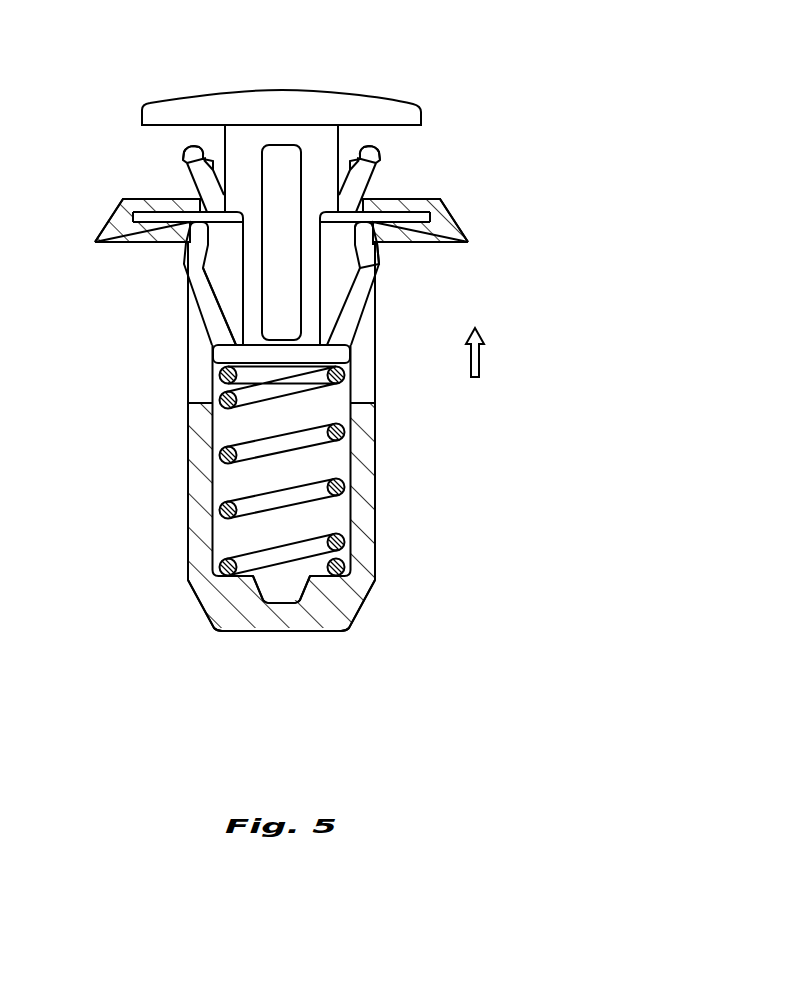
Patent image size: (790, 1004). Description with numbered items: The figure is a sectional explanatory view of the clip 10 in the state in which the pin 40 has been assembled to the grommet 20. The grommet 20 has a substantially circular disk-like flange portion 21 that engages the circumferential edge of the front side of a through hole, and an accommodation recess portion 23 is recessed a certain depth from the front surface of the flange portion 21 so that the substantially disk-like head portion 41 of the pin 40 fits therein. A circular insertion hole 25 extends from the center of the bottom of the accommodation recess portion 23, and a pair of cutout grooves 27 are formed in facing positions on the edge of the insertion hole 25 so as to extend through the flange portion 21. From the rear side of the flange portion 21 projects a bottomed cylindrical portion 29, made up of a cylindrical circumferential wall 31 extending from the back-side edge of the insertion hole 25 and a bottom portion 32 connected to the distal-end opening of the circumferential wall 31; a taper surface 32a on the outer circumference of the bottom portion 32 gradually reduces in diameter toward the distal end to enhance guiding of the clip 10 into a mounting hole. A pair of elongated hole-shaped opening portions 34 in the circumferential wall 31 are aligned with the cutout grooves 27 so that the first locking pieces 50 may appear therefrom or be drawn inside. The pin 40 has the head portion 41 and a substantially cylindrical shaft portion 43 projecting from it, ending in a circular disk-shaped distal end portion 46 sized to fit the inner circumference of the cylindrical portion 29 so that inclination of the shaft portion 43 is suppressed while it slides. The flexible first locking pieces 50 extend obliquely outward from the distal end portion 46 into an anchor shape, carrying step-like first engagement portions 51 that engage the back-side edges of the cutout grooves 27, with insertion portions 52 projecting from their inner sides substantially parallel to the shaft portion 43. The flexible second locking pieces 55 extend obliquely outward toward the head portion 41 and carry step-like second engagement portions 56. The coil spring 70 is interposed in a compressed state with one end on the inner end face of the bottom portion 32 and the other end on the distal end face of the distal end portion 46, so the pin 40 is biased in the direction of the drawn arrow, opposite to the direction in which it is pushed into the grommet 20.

The clip 10 is at (287, 344).
The grommet 20 is at (322, 220).
The flange portion 21 is at (452, 206).
The accommodation recess portion 23 is at (154, 203).
The insertion hole 25 is at (223, 246).
The cutout grooves 27 is at (385, 240).
The cylindrical portion 29 is at (270, 462).
The circumferential wall 31 is at (192, 514).
The bottom portion 32 is at (237, 604).
The taper surface 32a is at (358, 610).
The elongated hole-shaped opening portions 34 is at (203, 405).
The pin 40 is at (281, 180).
The head portion 41 is at (279, 102).
The shaft portion 43 is at (238, 308).
The distal end portion 46 is at (341, 356).
The first locking pieces 50 is at (204, 302).
The first engagement portions 51 is at (381, 262).
The insertion portions 52 is at (366, 222).
The second locking pieces 55 is at (183, 168).
The second engagement portions 56 is at (380, 153).
The coil spring 70 is at (344, 433).